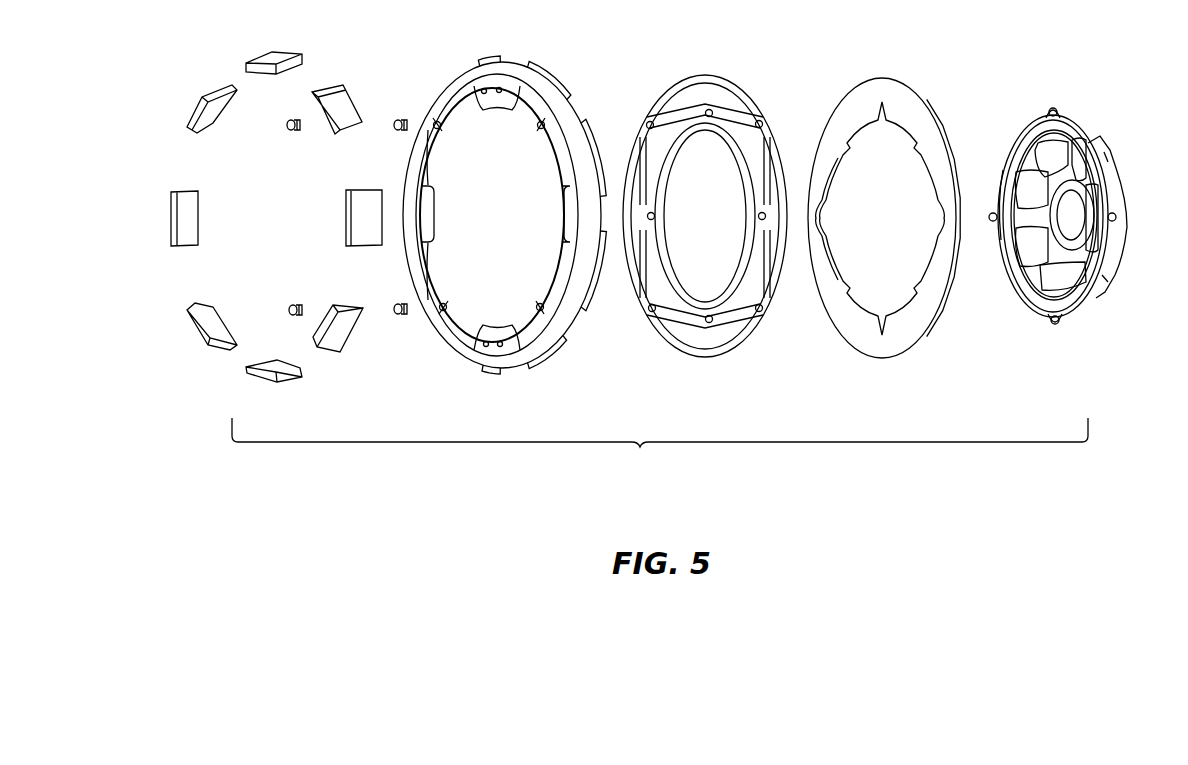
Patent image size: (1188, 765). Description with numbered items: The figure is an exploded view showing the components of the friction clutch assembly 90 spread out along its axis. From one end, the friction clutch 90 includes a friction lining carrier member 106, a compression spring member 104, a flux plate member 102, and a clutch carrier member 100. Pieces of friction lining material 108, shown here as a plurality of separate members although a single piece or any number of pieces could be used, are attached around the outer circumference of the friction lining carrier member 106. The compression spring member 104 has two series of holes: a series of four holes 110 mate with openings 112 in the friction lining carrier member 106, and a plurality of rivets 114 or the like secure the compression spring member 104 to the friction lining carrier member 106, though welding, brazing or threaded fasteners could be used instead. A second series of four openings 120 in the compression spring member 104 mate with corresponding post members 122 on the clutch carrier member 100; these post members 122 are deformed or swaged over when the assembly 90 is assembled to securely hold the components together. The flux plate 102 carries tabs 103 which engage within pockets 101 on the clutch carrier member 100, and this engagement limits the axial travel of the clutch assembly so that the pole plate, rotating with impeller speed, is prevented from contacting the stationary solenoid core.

The friction clutch assembly 90 is at (660, 448).
The clutch carrier member 100 is at (1102, 290).
The pockets 101 is at (1012, 145).
The flux plate member 102 is at (920, 335).
The tabs 103 is at (915, 160).
The compression spring member 104 is at (740, 360).
The friction lining carrier member 106 is at (553, 360).
The friction lining material 108 is at (335, 102).
The holes 110 is at (648, 122).
The openings 112 is at (445, 130).
The rivets 114 is at (287, 130).
The openings 120 is at (709, 118).
The post members 122 is at (1058, 110).